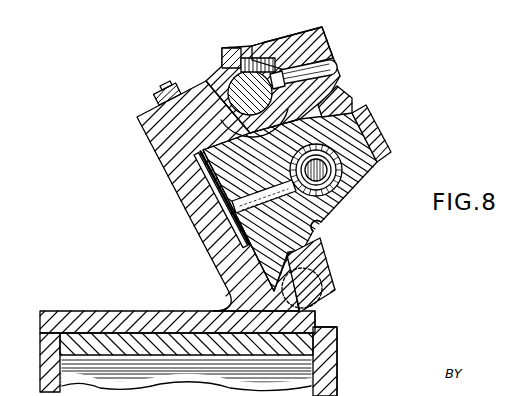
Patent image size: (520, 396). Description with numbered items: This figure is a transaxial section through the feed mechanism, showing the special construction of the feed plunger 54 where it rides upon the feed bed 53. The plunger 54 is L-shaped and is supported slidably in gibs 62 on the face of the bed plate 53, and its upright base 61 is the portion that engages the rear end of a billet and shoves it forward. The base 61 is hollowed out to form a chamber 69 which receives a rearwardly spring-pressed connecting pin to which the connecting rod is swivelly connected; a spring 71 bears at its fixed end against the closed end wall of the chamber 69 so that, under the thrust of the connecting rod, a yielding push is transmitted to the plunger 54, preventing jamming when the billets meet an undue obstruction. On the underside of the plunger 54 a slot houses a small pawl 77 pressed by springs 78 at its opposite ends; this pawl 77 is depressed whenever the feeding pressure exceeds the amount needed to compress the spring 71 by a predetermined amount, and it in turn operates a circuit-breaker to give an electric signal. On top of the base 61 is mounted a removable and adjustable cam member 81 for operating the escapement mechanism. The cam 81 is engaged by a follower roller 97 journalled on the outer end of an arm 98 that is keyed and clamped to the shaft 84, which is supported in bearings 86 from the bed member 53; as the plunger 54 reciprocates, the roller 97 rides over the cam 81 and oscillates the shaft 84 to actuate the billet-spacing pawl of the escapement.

The feed bed 53 is at (183, 182).
The feed plunger 54 is at (320, 225).
The base 61 is at (353, 103).
The gibs 62 is at (315, 308).
The chamber 69 is at (336, 200).
The spring 71 is at (378, 172).
The pawl 77 is at (223, 218).
The springs 78 is at (212, 203).
The cam member 81 is at (338, 94).
The shaft 84 is at (220, 70).
The bearings 86 is at (222, 48).
The follower roller 97 is at (320, 55).
The arm 98 is at (278, 43).